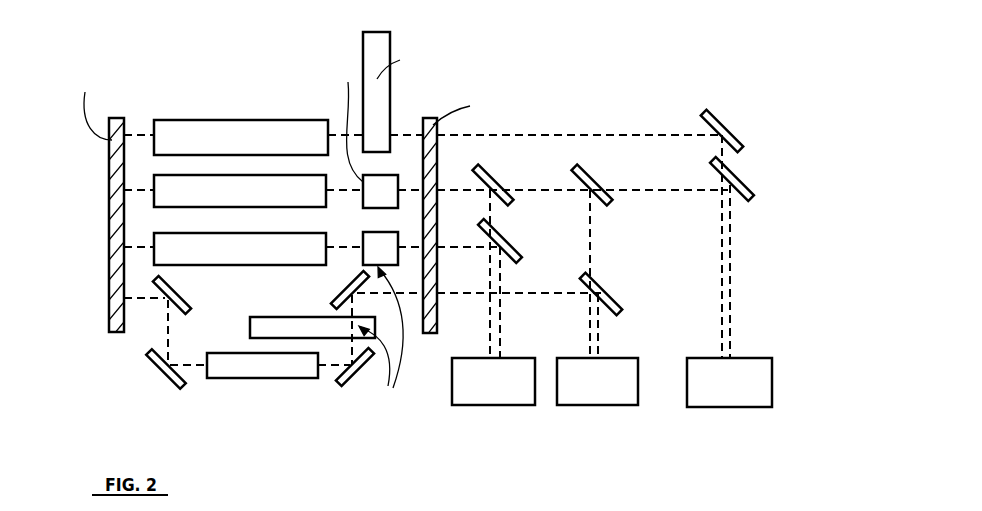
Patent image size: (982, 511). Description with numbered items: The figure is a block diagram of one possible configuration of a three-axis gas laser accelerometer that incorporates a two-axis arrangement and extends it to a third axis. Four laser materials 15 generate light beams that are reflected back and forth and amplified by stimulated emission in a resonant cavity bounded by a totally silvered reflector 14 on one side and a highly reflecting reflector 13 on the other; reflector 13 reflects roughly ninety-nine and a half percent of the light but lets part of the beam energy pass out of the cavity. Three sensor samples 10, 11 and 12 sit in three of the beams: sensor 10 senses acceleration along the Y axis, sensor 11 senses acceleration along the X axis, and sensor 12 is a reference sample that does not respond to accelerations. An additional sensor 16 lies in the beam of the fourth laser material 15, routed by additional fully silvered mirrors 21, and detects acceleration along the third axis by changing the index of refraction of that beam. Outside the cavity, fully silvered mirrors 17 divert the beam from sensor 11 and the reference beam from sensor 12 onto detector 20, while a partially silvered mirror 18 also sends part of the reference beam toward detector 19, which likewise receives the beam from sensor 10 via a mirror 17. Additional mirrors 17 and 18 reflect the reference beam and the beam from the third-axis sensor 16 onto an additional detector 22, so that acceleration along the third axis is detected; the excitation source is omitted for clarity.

The sensor 10 is at (363, 253).
The sensor 11 is at (377, 45).
The reference sensor 12 is at (363, 197).
The reflector 13 is at (430, 333).
The reflector 14 is at (118, 307).
The laser material 15 is at (210, 122).
The sensor 16 is at (280, 330).
The fully silvered mirror 17 is at (500, 240).
The partially silvered mirror 18 is at (583, 178).
The detector 19 is at (494, 392).
The detector 20 is at (748, 393).
The fully silvered mirror 21 is at (172, 380).
The detector 22 is at (606, 393).